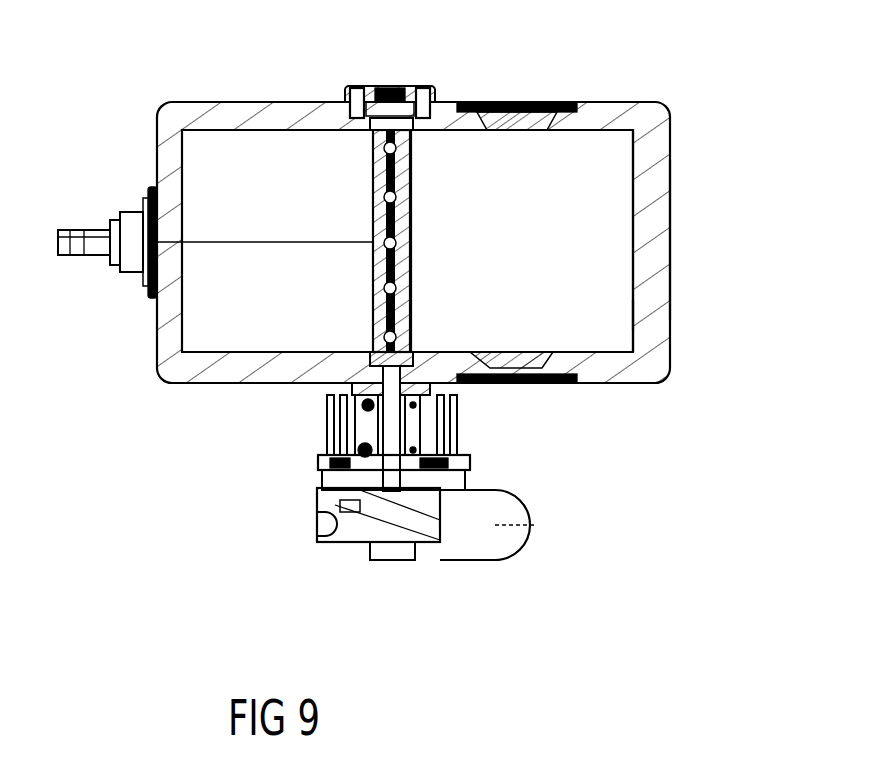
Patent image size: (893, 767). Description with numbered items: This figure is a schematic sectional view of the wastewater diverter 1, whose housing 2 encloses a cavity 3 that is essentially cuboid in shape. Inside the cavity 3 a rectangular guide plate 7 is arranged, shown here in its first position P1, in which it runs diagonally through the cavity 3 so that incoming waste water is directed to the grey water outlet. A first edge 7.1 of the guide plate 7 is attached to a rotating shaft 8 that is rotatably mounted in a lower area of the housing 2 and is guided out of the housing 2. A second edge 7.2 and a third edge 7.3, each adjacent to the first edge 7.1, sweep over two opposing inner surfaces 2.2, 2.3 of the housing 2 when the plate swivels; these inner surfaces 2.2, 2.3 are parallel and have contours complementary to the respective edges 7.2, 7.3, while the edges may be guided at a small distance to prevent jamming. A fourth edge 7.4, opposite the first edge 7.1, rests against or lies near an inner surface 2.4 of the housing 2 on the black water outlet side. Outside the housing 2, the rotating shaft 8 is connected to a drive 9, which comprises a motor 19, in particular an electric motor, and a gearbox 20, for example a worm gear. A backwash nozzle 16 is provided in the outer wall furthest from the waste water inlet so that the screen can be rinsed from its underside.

The wastewater diverter 1 is at (135, 88).
The housing 2 is at (256, 110).
The inner surface 2.2 is at (592, 355).
The inner surface 2.3 is at (603, 128).
The inner surface 2.4 is at (633, 174).
The cavity 3 is at (230, 335).
The guide plate 7 is at (521, 218).
The first edge 7.1 is at (413, 272).
The second edge 7.2 is at (505, 353).
The third edge 7.3 is at (482, 132).
The fourth edge 7.4 is at (633, 236).
The rotating shaft 8 is at (383, 168).
The drive 9 is at (456, 519).
The backwash nozzle 16 is at (138, 257).
The motor 19 is at (497, 520).
The gearbox 20 is at (365, 527).
The first position P1 is at (637, 315).